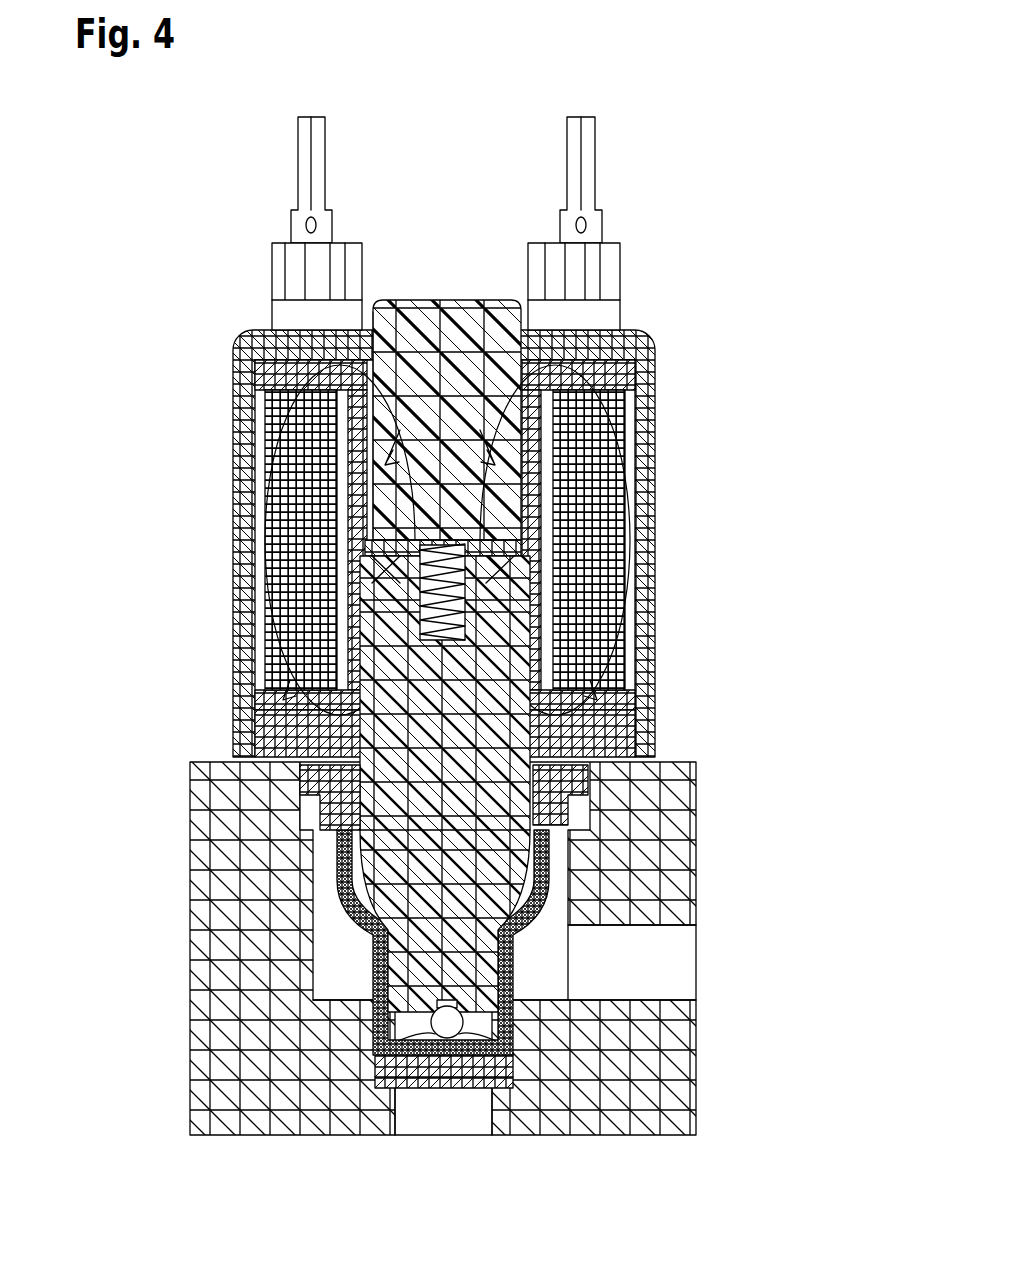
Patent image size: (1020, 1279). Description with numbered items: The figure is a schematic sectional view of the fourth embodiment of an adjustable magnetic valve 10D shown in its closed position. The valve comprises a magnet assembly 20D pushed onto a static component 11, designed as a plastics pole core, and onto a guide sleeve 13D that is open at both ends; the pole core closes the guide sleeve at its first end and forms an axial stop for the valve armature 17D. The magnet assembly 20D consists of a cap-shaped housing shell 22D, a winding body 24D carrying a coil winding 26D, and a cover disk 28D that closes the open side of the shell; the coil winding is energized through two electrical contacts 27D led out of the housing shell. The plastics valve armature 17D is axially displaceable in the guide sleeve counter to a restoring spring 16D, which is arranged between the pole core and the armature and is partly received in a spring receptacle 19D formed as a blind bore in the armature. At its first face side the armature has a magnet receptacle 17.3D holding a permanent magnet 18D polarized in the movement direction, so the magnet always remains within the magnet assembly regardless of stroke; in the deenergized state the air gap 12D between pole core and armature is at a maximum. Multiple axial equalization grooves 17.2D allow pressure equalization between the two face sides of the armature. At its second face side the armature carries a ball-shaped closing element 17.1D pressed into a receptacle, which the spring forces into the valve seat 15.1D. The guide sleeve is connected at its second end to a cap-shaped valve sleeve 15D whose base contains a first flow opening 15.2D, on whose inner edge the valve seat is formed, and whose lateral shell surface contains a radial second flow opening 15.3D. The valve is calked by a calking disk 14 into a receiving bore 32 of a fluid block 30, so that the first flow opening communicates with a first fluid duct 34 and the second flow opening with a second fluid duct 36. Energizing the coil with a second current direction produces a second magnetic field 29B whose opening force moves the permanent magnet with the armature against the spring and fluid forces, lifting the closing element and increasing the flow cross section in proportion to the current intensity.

The adjustable magnetic valve 10D is at (175, 225).
The magnet assembly 20D is at (175, 328).
The electrical contact 27D is at (315, 165).
The static component 11 is at (440, 310).
The housing shell 22D is at (640, 335).
The second magnetic field 29B is at (272, 386).
The coil winding 26D is at (600, 415).
The restoring spring 16D is at (470, 452).
The winding body 24D is at (550, 500).
The air gap 12D is at (400, 548).
The magnet receptacle 17.3D is at (500, 570).
The equalization groove 17.2D is at (520, 630).
The permanent magnet 18D is at (395, 590).
The spring receptacle 19D is at (430, 600).
The valve armature 17D is at (380, 700).
The guide sleeve 13D is at (255, 740).
The cover disk 28D is at (620, 735).
The receiving bore 32 is at (310, 800).
The calking disk 14 is at (575, 790).
The fluid block 30 is at (220, 908).
The second flow opening 15.3D is at (505, 975).
The second fluid duct 36 is at (660, 970).
The valve seat 15.1D is at (380, 1050).
The valve sleeve 15D is at (500, 1030).
The first fluid duct 34 is at (420, 1135).
The first flow opening 15.2D is at (445, 1040).
The closing element 17.1D is at (470, 1030).